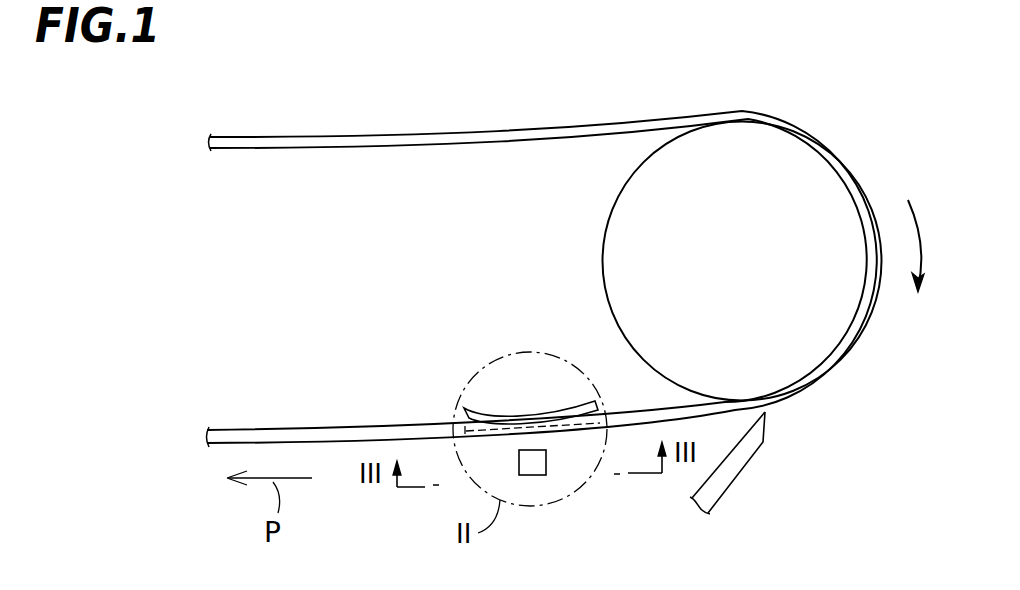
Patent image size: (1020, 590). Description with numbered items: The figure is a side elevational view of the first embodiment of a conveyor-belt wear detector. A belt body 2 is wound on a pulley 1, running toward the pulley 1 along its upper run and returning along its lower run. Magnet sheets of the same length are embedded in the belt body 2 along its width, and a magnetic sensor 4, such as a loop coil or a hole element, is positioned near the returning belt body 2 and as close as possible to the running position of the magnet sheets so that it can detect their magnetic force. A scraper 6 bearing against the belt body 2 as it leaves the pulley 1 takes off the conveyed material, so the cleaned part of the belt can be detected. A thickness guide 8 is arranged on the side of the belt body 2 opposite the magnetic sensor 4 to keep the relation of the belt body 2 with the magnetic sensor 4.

The pulley 1 is at (798, 172).
The belt body 2 is at (316, 138).
The magnetic sensor 4 is at (546, 458).
The scraper 6 is at (737, 475).
The thickness guide 8 is at (520, 411).